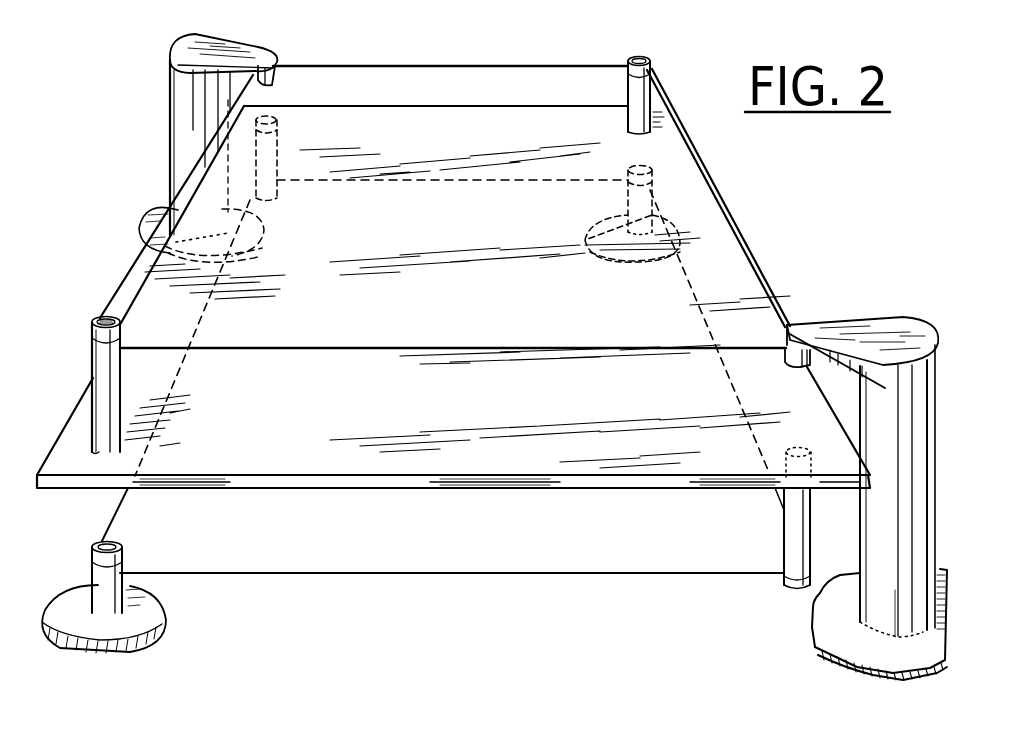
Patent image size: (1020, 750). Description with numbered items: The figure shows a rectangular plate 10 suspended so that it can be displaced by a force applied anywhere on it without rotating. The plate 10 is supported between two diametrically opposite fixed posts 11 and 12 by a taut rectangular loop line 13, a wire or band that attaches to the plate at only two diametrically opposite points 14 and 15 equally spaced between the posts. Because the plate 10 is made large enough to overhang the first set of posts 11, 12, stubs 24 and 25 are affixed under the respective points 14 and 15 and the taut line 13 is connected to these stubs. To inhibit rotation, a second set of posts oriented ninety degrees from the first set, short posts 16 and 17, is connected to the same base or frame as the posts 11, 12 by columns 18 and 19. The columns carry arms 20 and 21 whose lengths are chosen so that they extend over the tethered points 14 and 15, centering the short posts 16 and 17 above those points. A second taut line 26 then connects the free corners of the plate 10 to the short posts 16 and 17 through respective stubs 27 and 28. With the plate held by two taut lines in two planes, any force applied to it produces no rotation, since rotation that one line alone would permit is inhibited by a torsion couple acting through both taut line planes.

The plate 10 is at (252, 465).
The post 11 is at (110, 545).
The post 12 is at (636, 168).
The taut rectangular loop line 13 is at (590, 574).
The tethered point 14 is at (272, 119).
The tethered point 15 is at (790, 454).
The short post 16 is at (274, 82).
The short post 17 is at (800, 368).
The column 18 is at (182, 116).
The column 19 is at (866, 518).
The arm 20 is at (260, 50).
The arm 21 is at (812, 316).
The stub 24 is at (268, 155).
The stub 25 is at (788, 522).
The taut line 26 is at (728, 194).
The stub 27 is at (102, 360).
The stub 28 is at (632, 86).